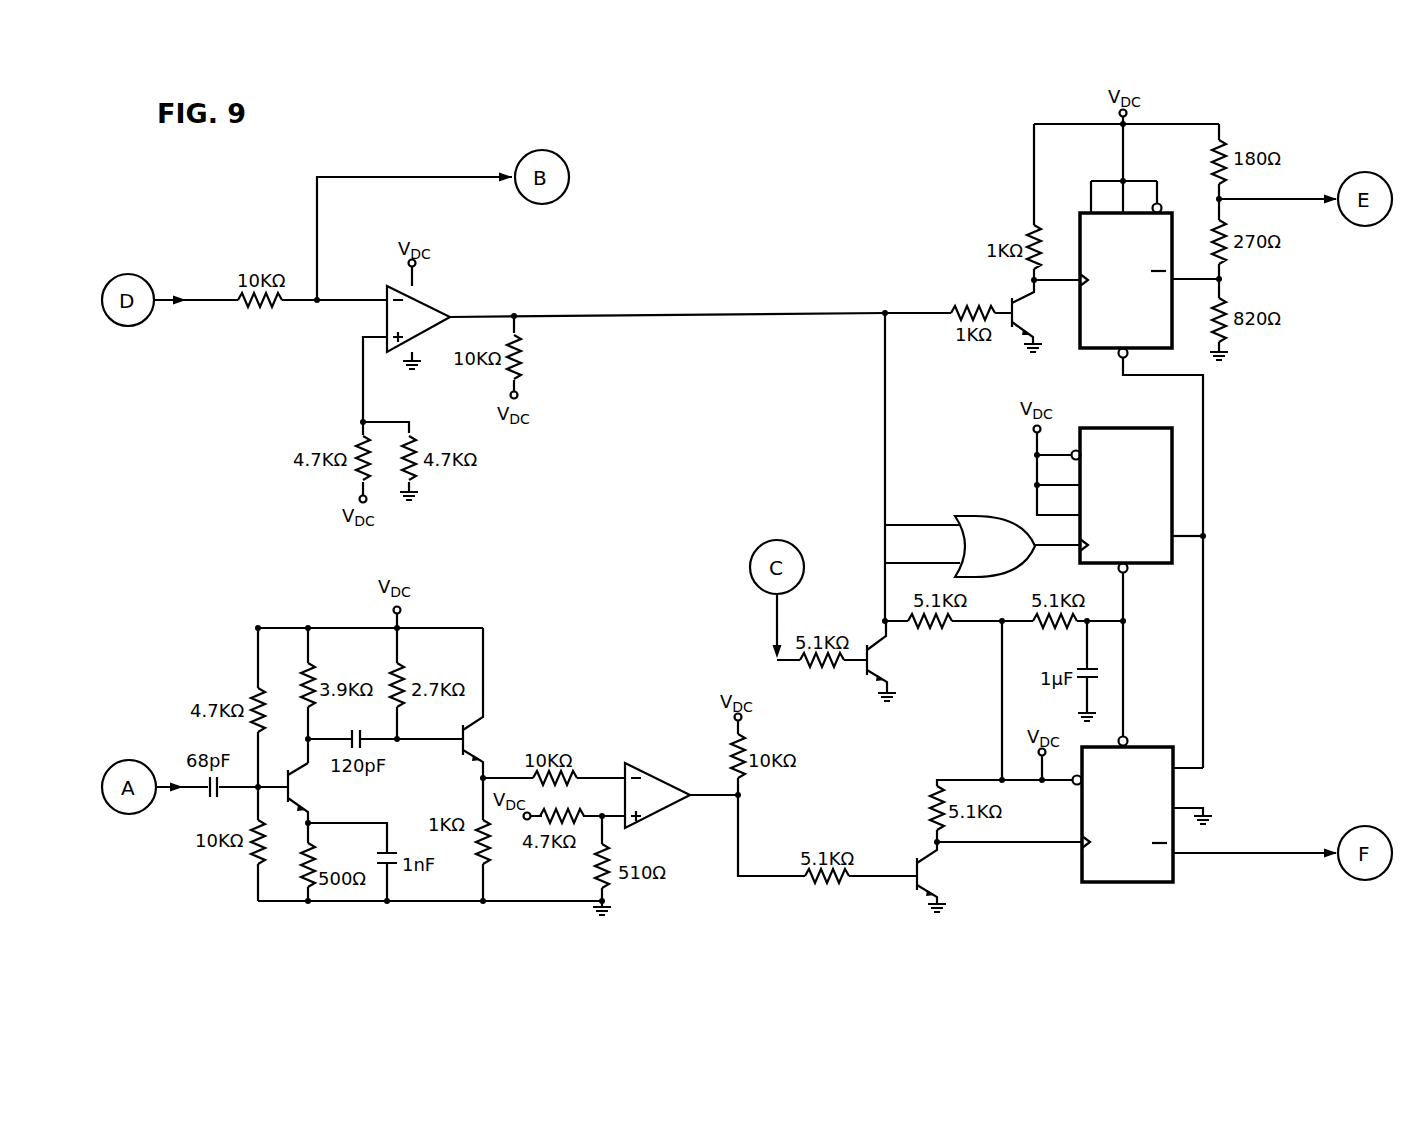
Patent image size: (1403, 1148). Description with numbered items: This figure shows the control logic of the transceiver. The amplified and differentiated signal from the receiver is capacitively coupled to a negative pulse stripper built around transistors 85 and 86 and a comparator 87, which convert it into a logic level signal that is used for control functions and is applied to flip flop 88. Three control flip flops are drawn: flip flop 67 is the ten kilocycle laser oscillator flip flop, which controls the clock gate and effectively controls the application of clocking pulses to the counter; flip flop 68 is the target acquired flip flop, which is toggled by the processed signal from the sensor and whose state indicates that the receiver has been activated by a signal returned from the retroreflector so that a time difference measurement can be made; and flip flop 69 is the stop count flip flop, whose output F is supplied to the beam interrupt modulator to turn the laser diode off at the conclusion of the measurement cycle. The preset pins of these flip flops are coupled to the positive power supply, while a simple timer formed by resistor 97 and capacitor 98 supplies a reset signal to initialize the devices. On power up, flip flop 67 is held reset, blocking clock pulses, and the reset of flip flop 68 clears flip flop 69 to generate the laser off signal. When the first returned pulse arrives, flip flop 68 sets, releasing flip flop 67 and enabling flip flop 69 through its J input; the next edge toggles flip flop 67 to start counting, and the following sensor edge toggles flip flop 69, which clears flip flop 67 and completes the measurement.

The 10 Kc laser oscillator flip flop 67 is at (1137, 294).
The target acquired flip flop 68 is at (1148, 511).
The stop count flip flop 69 is at (1140, 831).
The transistor 85 is at (312, 780).
The transistor 86 is at (486, 722).
The comparator 87 is at (647, 771).
The flip flop 88 is at (1147, 747).
The resistor 97 is at (1058, 630).
The capacitor 98 is at (1091, 669).